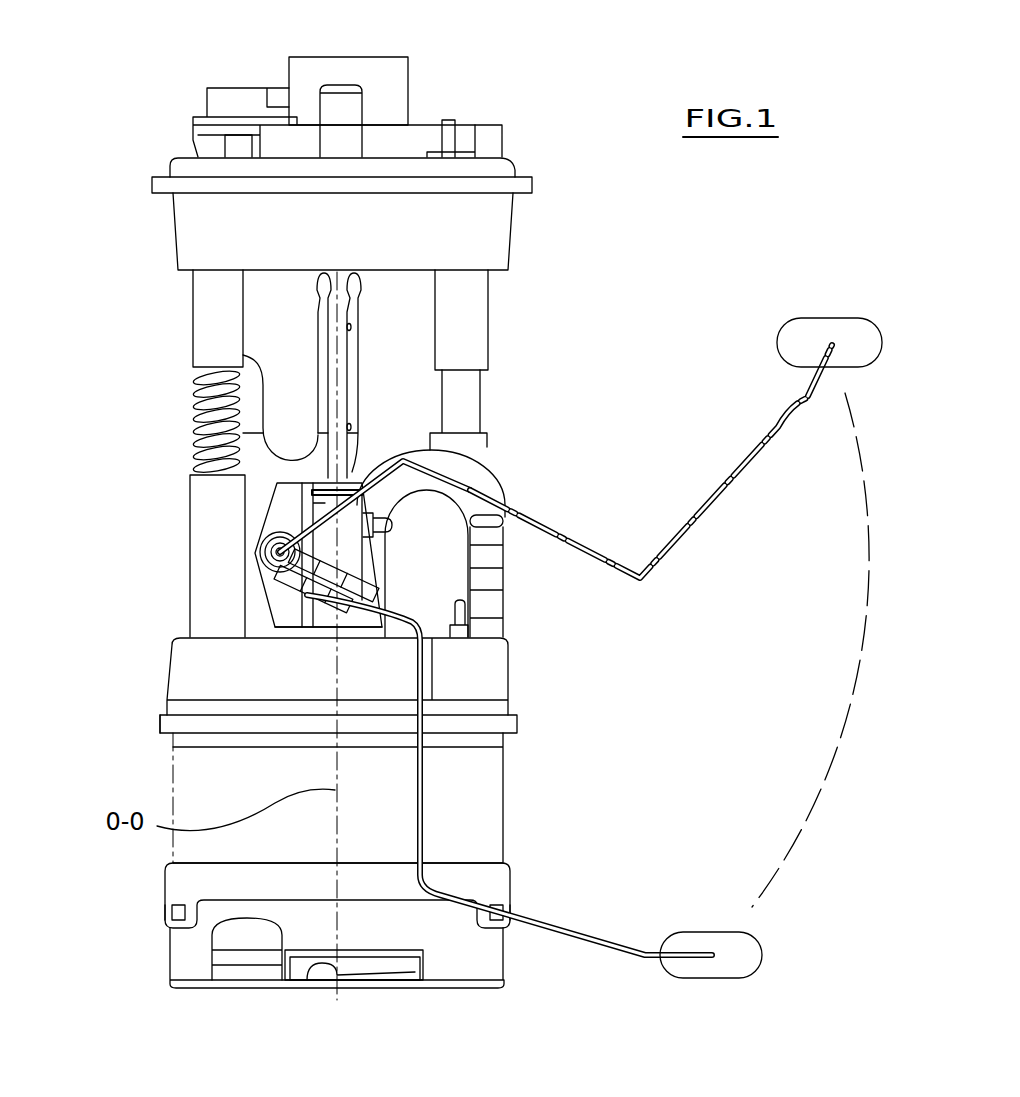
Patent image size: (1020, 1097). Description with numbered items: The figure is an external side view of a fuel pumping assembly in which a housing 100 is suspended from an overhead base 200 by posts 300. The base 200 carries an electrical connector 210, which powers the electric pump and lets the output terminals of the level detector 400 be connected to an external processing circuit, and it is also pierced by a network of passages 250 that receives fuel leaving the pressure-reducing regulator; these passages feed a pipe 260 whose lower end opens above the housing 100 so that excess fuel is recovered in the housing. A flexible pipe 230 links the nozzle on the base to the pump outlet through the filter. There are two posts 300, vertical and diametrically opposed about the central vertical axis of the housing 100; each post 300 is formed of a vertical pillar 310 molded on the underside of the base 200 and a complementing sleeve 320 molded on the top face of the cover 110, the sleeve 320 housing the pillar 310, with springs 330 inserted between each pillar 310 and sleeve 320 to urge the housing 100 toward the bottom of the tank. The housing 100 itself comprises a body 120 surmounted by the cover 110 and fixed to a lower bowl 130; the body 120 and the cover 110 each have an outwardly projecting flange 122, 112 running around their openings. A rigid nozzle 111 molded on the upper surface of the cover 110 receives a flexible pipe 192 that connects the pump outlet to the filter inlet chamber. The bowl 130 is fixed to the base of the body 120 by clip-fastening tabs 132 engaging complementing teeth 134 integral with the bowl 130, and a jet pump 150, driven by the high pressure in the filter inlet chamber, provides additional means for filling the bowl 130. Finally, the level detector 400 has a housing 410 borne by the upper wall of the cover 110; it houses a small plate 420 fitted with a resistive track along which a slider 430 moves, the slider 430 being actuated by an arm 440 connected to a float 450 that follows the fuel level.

The housing 100 is at (350, 853).
The cover 110 is at (480, 685).
The rigid nozzle 111 is at (493, 608).
The flange 112 is at (155, 700).
The body 120 is at (485, 793).
The flange 122 is at (507, 727).
The lower bowl 130 is at (450, 965).
The clip-fastening tabs 132 is at (182, 933).
The complementing teeth 134 is at (172, 912).
The jet pump 150 is at (313, 1002).
The flexible pipe 192 is at (483, 485).
The base 200 is at (487, 235).
The electrical connector 210 is at (393, 83).
The flexible pipe 230 is at (360, 388).
The network of passages 250 is at (333, 105).
The pipe 260 is at (340, 345).
The posts 300 is at (505, 345).
The vertical pillar 310 is at (210, 330).
The sleeve 320 is at (208, 578).
The springs 330 is at (198, 430).
The level detector 400 is at (418, 578).
The housing 410 is at (270, 522).
The small plate 420 is at (347, 547).
The slider 430 is at (306, 622).
The arm 440 is at (605, 952).
The float 450 is at (725, 967).